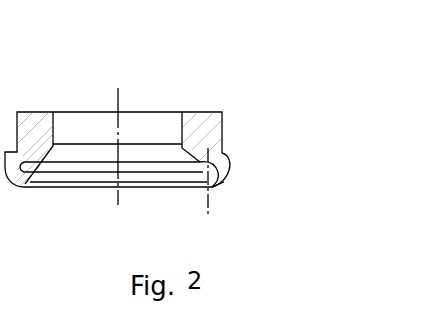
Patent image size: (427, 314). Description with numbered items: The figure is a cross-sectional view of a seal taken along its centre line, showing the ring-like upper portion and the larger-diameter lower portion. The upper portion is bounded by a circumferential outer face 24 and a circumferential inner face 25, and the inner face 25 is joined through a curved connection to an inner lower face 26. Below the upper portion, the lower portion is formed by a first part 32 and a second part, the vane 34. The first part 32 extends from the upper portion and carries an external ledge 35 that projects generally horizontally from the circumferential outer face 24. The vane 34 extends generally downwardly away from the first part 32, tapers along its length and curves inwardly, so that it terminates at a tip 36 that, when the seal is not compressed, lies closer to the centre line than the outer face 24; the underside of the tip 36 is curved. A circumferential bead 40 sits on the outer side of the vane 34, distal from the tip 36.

The circumferential outer face 24 is at (222, 150).
The circumferential inner face 25 is at (200, 162).
The inner lower face 26 is at (203, 162).
The first part 32 is at (227, 158).
The vane 34 is at (218, 182).
The external ledge 35 is at (222, 152).
The tip 36 is at (218, 195).
The circumferential bead 40 is at (228, 177).